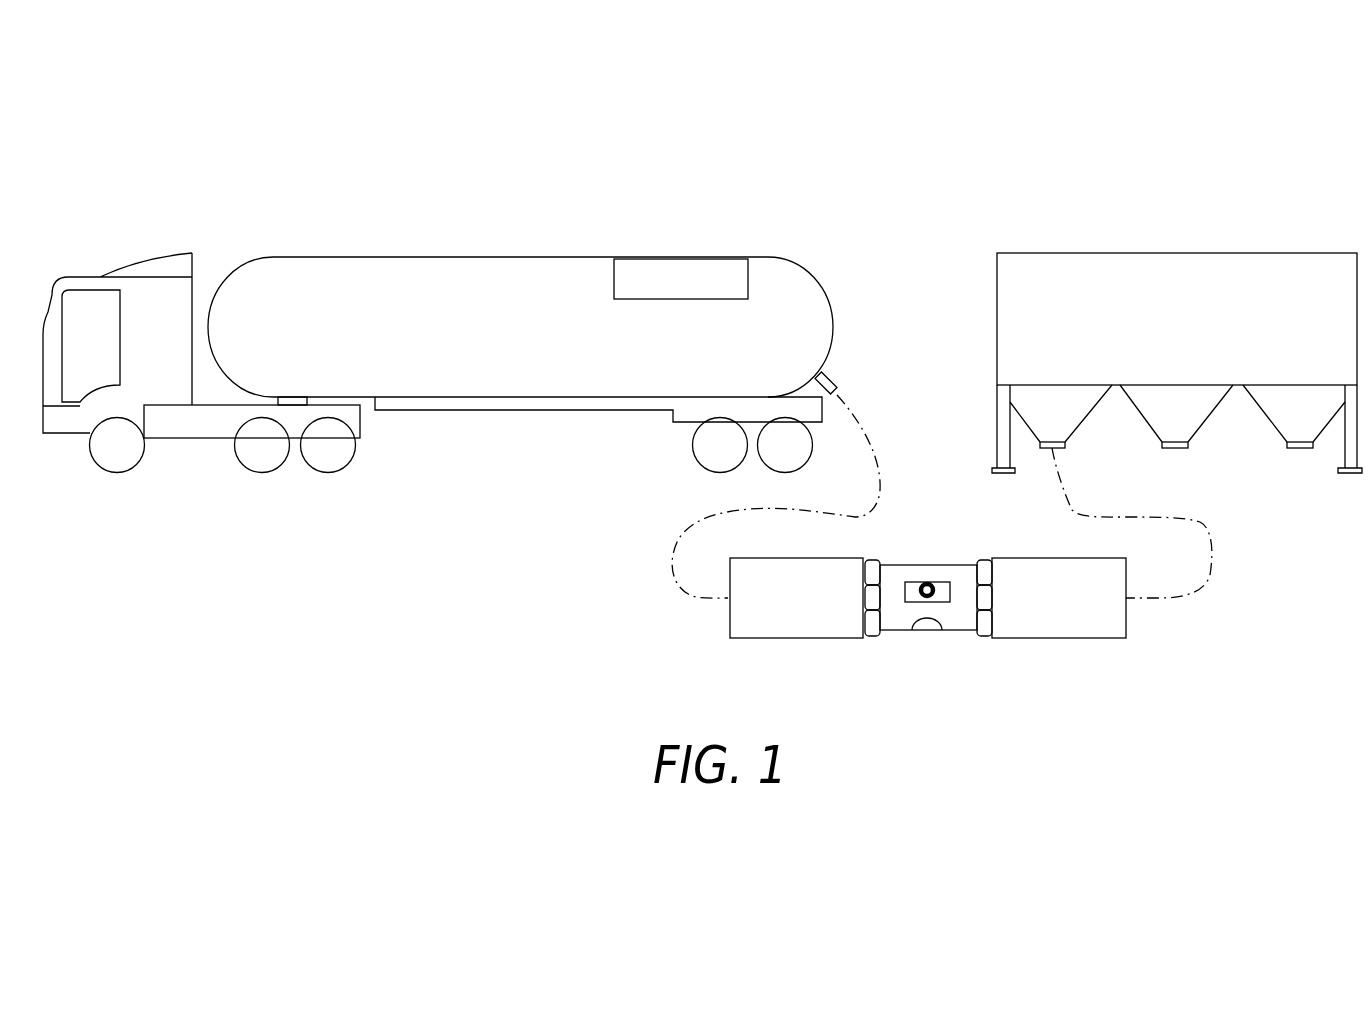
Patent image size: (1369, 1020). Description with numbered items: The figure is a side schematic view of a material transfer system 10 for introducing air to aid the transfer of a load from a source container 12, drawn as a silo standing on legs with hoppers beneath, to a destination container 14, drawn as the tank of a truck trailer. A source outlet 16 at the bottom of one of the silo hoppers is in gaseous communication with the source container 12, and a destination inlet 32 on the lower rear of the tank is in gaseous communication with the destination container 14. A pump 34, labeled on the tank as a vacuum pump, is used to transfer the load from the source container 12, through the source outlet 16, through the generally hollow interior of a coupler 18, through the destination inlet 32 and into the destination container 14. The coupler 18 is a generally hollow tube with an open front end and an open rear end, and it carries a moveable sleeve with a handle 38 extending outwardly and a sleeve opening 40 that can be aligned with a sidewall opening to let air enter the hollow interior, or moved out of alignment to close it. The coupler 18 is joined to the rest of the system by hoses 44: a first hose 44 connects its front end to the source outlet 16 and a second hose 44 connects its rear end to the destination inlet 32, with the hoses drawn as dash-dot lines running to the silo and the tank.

The material transfer system 10 is at (1058, 144).
The source container 12 is at (1138, 270).
The destination container 14 is at (542, 265).
The source outlet 16 is at (1058, 447).
The coupler 18 is at (915, 562).
The destination inlet 32 is at (830, 373).
The pump 34 is at (693, 262).
The handle 38 is at (943, 593).
The sleeve opening 40 is at (927, 623).
The hoses 44 is at (803, 623).